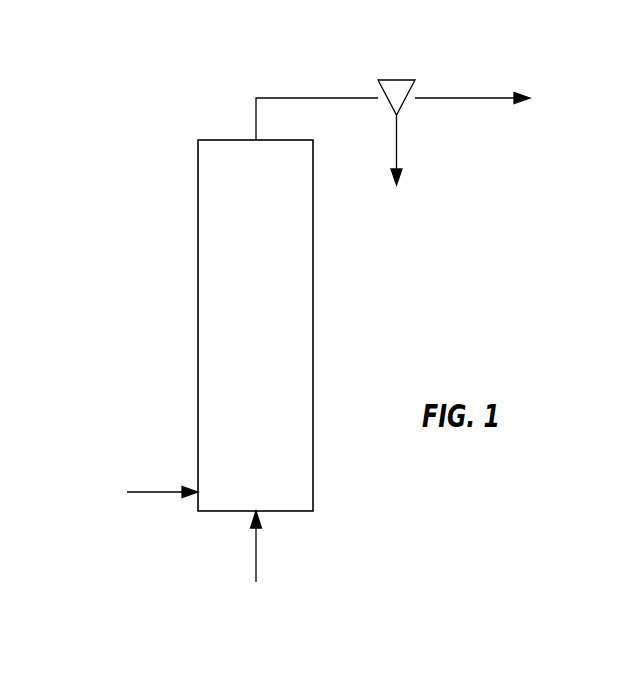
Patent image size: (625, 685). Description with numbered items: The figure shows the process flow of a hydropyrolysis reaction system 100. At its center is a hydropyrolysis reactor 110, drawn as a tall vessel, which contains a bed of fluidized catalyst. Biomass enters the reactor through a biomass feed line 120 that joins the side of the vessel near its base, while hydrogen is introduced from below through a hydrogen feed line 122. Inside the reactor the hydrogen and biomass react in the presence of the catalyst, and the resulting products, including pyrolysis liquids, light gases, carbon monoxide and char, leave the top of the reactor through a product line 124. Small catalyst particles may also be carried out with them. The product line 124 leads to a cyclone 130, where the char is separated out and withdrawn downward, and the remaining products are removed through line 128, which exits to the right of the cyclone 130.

The hydropyrolysis reaction system 100 is at (133, 66).
The hydropyrolysis reactor 110 is at (278, 340).
The biomass feed line 120 is at (152, 492).
The hydrogen feed line 122 is at (258, 547).
The product line 124 is at (302, 98).
The line 128 is at (492, 98).
The cyclone 130 is at (398, 80).